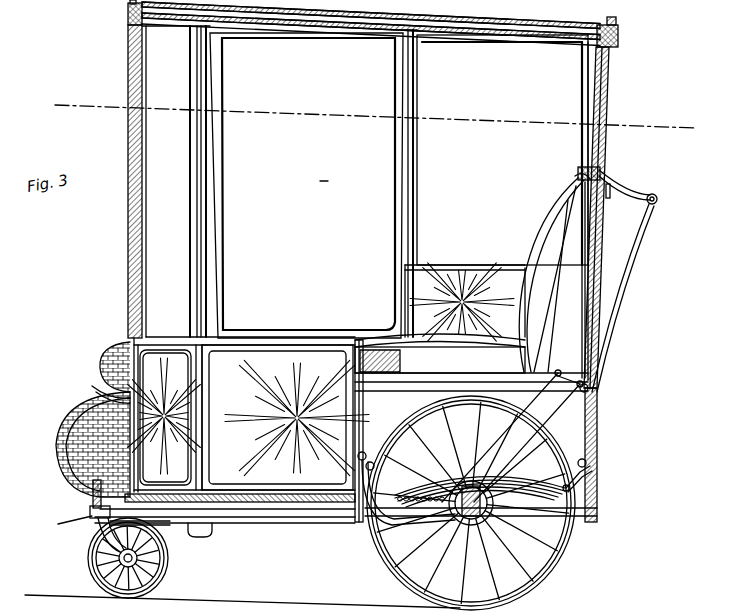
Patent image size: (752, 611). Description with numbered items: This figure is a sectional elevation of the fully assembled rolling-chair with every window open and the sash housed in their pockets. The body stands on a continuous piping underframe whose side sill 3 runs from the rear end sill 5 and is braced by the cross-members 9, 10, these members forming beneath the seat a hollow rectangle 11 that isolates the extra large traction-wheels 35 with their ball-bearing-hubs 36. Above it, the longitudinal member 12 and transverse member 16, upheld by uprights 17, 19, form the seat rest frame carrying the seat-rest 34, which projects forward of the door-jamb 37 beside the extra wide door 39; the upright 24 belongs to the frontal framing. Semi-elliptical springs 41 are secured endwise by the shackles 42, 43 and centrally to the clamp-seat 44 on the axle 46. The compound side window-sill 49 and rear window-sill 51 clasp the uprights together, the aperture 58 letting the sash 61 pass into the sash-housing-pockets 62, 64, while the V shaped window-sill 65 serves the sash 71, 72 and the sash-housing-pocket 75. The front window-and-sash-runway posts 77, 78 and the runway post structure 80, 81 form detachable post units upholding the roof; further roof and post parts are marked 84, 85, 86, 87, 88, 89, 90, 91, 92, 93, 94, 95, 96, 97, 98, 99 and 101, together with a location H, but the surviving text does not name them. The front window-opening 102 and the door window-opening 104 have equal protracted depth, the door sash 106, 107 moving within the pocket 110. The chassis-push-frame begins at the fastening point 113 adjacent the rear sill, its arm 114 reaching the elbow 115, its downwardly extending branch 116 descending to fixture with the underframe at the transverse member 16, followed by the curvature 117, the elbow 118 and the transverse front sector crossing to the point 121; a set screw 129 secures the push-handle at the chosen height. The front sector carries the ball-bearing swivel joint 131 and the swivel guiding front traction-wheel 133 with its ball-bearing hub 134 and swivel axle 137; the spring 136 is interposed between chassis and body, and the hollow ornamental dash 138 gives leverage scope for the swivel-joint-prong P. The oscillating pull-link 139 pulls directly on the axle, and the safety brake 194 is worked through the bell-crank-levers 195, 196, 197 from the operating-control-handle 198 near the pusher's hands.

The side sill 3 is at (300, 510).
The rear end sill 5 is at (598, 517).
The cross-member 9 is at (187, 502).
The cross-member 10 is at (356, 514).
The hollow rectangle 11 is at (414, 381).
The longitudinal member 12 is at (446, 382).
The transverse member 16 is at (590, 388).
The upright 17 is at (382, 402).
The upright 19 is at (598, 433).
The upright 24 is at (104, 389).
The seat-rest 34 is at (474, 358).
The traction-wheels 35 is at (568, 563).
The ball-bearing-hubs 36 is at (478, 517).
The door-jamb 37 is at (405, 253).
The door 39 is at (208, 265).
The semi-elliptical springs 41 is at (505, 485).
The shackle 42 is at (364, 452).
The shackle 43 is at (598, 470).
The clamp-seat 44 is at (488, 515).
The axle 46 is at (470, 519).
The compound side window-sill 49 is at (445, 266).
The rear window-sill 51 is at (577, 176).
The aperture 58 is at (594, 170).
The sash 61 is at (583, 269).
The sash-housing-pocket 62 is at (480, 286).
The sash-housing-pocket 64 is at (572, 323).
The V shaped window-sill 65 is at (122, 343).
The sash 71 is at (146, 336).
The sash 72 is at (168, 336).
The sash-housing-pocket 75 is at (202, 348).
The front window-and-sash-runway post 77 is at (200, 211).
The front window-and-sash-runway post 78 is at (128, 214).
The runway post structure 80 is at (410, 149).
The runway post structure 81 is at (590, 136).
The roof end block 84 is at (130, 26).
The roof member 85 is at (250, 18).
The roof member 86 is at (372, 20).
The roof member 87 is at (497, 25).
The roof 88 is at (183, 16).
The roof member 89 is at (310, 13).
The roof member 90 is at (440, 24).
The roof member 91 is at (543, 27).
The roof end cap 92 is at (126, 14).
The roof member 93 is at (252, 20).
The roof member 94 is at (366, 16).
The roof member 95 is at (490, 22).
The roof corner block 96 is at (618, 40).
The roof member 97 is at (331, 14).
The roof knob 98 is at (130, 3).
The rear window 99 is at (502, 207).
The post 101 is at (590, 111).
The front window-opening 102 is at (162, 157).
The window-opening 104 is at (306, 185).
The sash 106 is at (270, 341).
The sash 107 is at (323, 341).
The pocket 110 is at (278, 462).
The fastening point 113 is at (606, 178).
The arm 114 is at (630, 188).
The elbow 115 is at (660, 193).
The downwardly extending branch 116 is at (636, 246).
The curvature 117 is at (478, 431).
The elbow 118 is at (372, 532).
The point 121 is at (98, 528).
The set screw 129 is at (656, 203).
The ball-bearing swivel joint 131 is at (92, 509).
The swivel guiding front traction-wheel 133 is at (162, 574).
The ball-bearing hub 134 is at (118, 560).
The spring 136 is at (196, 503).
The swivel axle 137 is at (110, 574).
The ornamental dash 138 is at (62, 432).
The oscillating pull-link 139 is at (436, 501).
The safety brake 194 is at (464, 513).
The bell-crank-lever 195 is at (532, 407).
The bell-crank-lever 196 is at (560, 371).
The bell-crank-lever 197 is at (578, 349).
The operating-control-handle 198 is at (609, 200).
The reference H is at (403, 388).
The swivel-joint-prong P is at (65, 526).